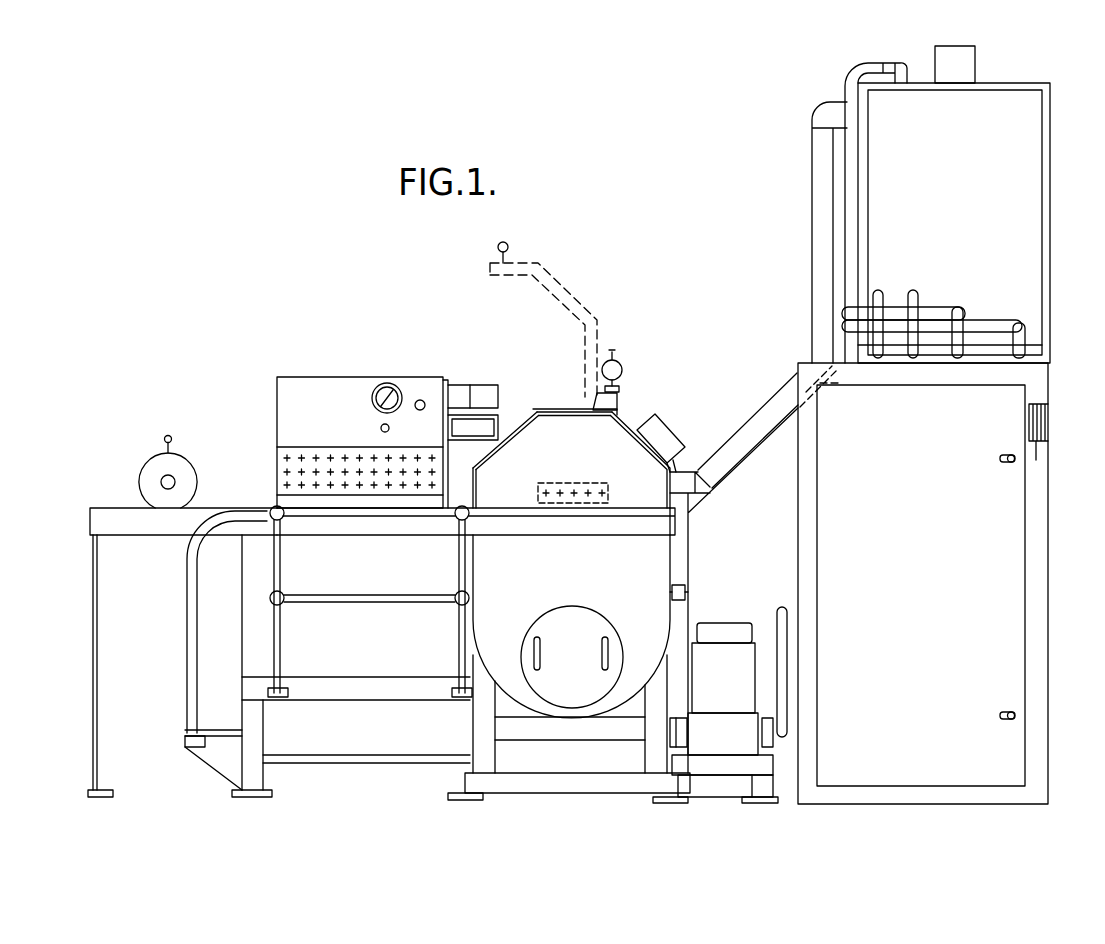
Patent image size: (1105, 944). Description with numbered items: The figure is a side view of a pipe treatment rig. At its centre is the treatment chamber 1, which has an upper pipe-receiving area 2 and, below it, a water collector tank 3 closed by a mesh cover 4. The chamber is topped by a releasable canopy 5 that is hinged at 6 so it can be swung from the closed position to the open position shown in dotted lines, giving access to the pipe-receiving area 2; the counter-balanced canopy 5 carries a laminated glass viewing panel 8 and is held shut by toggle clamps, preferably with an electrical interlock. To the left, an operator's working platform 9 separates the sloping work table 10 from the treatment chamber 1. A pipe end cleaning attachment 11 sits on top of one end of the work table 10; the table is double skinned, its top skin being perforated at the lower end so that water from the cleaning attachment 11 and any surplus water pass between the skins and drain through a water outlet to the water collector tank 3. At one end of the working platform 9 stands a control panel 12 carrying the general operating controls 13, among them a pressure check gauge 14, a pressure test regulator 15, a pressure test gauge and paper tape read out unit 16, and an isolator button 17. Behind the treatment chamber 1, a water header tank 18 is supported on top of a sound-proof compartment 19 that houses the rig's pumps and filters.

The treatment chamber 1 is at (639, 415).
The pipe-receiving area 2 is at (583, 456).
The water collector tank 3 is at (518, 617).
The mesh cover 4 is at (567, 523).
The releasable canopy 5 is at (529, 398).
The hinge 6 is at (614, 394).
The laminated glass viewing panel 8 is at (513, 427).
The operator's working platform 9 is at (363, 702).
The sloping work table 10 is at (107, 513).
The pipe end cleaning attachment 11 is at (185, 459).
The control panel 12 is at (268, 448).
The general operating controls 13 is at (283, 470).
The pressure check gauge 14 is at (378, 393).
The pressure test regulator 15 is at (420, 400).
The pressure test gauge and paper tape read out unit 16 is at (500, 385).
The isolator button 17 is at (306, 377).
The water header tank 18 is at (963, 213).
The sound-proof compartment 19 is at (942, 572).